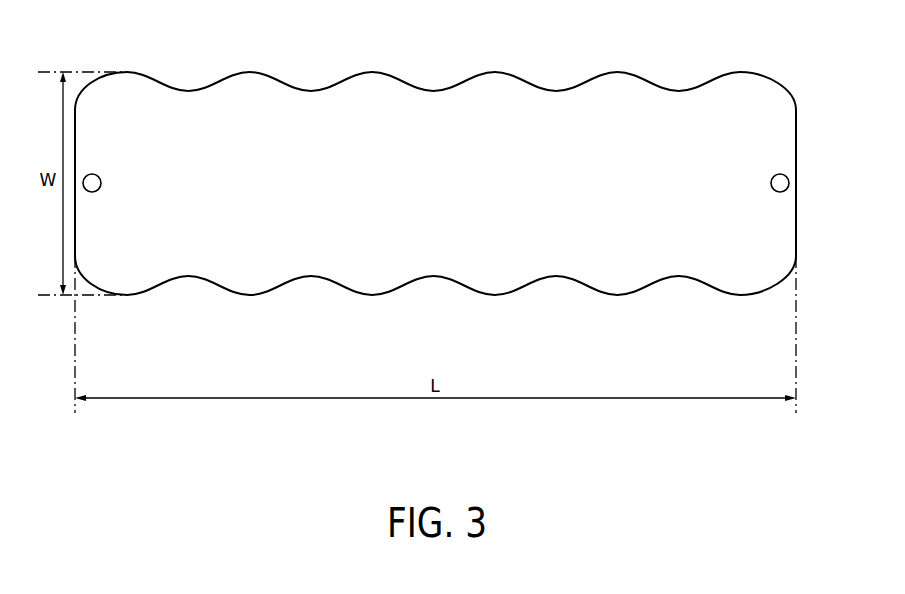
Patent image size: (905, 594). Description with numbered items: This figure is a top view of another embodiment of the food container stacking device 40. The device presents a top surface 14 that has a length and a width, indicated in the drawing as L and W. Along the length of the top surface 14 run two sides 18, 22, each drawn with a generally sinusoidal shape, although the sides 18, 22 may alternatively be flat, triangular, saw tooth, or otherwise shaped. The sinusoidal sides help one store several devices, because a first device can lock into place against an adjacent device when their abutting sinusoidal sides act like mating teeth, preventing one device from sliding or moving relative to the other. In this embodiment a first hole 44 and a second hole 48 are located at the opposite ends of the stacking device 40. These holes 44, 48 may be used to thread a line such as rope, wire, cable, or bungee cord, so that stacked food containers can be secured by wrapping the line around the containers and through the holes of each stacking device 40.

The top surface 14 is at (435, 186).
The side 18 is at (497, 71).
The side 22 is at (415, 280).
The food container stacking device 40 is at (281, 316).
The first hole 44 is at (102, 183).
The second hole 48 is at (770, 183).